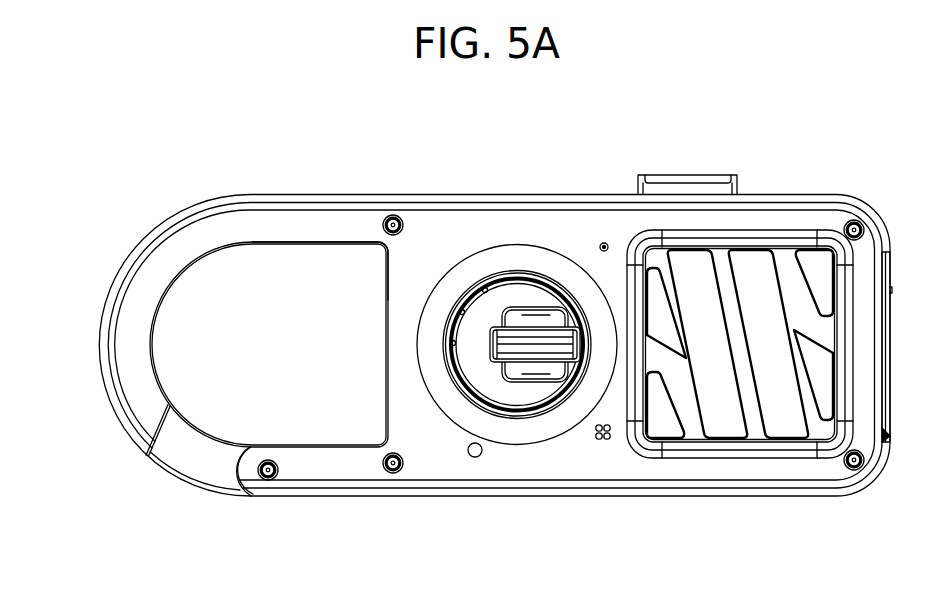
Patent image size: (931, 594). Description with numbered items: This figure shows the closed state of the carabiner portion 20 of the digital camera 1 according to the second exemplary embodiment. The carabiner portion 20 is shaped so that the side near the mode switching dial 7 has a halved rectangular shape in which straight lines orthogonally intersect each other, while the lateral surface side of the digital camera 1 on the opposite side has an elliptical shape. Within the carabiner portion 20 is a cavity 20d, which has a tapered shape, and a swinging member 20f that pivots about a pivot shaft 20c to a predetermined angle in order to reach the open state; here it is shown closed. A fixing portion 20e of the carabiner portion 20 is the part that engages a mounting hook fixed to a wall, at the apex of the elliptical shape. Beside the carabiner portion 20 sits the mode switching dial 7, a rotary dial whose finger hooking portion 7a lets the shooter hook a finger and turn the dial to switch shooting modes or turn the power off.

The digital camera 1 is at (176, 142).
The carabiner portion 20 is at (100, 342).
The pivot shaft 20c is at (272, 479).
The cavity 20d is at (293, 255).
The fixing portion 20e is at (360, 242).
The swinging member 20f is at (205, 453).
The mode switching dial 7 is at (500, 290).
The finger hooking portion 7a is at (540, 343).